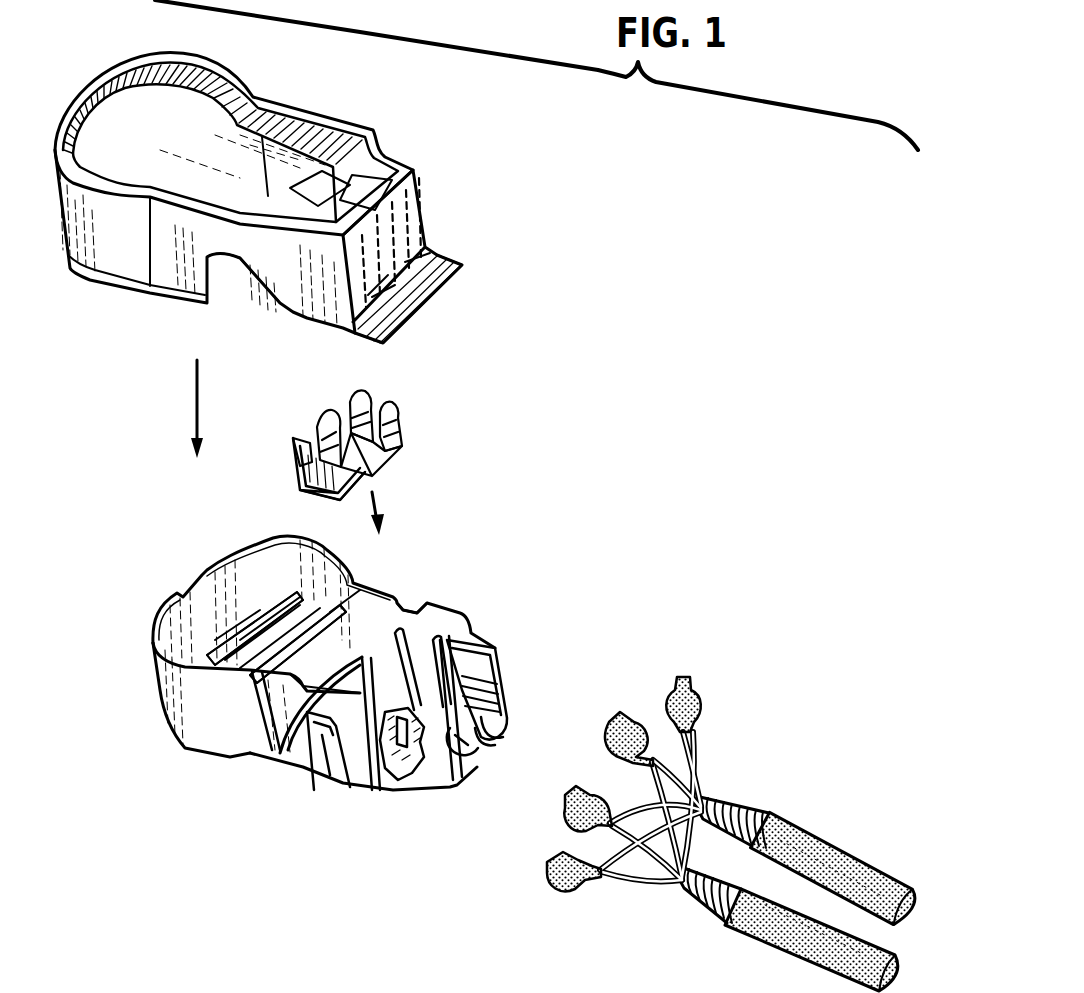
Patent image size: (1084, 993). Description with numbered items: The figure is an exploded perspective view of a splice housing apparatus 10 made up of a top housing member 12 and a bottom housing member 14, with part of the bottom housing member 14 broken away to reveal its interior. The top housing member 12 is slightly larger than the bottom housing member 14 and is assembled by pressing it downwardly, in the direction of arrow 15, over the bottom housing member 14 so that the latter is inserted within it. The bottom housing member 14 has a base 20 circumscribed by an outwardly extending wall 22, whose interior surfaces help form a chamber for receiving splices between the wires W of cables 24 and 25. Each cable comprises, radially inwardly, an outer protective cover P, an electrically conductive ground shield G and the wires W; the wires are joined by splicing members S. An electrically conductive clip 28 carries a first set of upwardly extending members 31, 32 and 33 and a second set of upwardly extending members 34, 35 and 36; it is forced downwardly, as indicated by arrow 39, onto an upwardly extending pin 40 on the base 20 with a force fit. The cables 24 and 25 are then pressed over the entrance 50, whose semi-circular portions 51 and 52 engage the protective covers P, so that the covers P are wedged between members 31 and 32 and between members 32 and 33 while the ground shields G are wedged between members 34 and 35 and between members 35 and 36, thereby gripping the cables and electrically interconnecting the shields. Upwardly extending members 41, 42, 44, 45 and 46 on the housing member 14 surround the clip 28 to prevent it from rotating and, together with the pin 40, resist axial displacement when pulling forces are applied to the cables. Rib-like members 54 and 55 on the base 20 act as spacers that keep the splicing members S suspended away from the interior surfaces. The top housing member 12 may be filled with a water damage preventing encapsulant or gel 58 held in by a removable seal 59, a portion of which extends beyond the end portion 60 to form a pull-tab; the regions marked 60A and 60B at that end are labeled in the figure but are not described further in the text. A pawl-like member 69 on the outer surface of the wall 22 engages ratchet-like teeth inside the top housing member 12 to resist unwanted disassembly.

The splice housing apparatus 10 is at (482, 533).
The first or top housing member 12 is at (287, 102).
The second or bottom housing member 14 is at (157, 615).
The arrow 15 is at (195, 403).
The base 20 is at (340, 669).
The outwardly extending wall 22 is at (177, 703).
The cable 24 is at (820, 847).
The cable 25 is at (767, 927).
The electrically conductive member or clip 28 is at (380, 385).
The upwardly extending member 31 is at (398, 430).
The upwardly extending member 32 is at (373, 460).
The upwardly extending member 33 is at (328, 494).
The upwardly extending member 34 is at (349, 397).
The upwardly extending member 35 is at (327, 420).
The upwardly extending member 36 is at (293, 438).
The arrow 39 is at (379, 502).
The upwardly extending pin 40 is at (390, 762).
The upwardly extending member 41 is at (411, 607).
The upwardly extending member 42 is at (440, 630).
The upwardly extending member 44 is at (283, 748).
The upwardly extending member 45 is at (460, 642).
The upwardly extending member 46 is at (372, 772).
The first entrance 50 is at (497, 683).
The upwardly extending semi-circular portion 51 is at (493, 732).
The upwardly extending semi-circular portion 52 is at (470, 758).
The rib-like member 54 is at (277, 610).
The rib-like member 55 is at (307, 600).
The water damage preventing material 58 is at (248, 270).
The removable seal 59 is at (441, 268).
The end portion 60 is at (398, 192).
The slot 60A is at (407, 260).
The slot 60B is at (377, 295).
The pawl-like member 69 is at (312, 770).
The splicing member S is at (702, 697).
The wires or conductors W is at (700, 762).
The electrically conductive ground shield G is at (737, 817).
The outer protective cover P is at (863, 877).